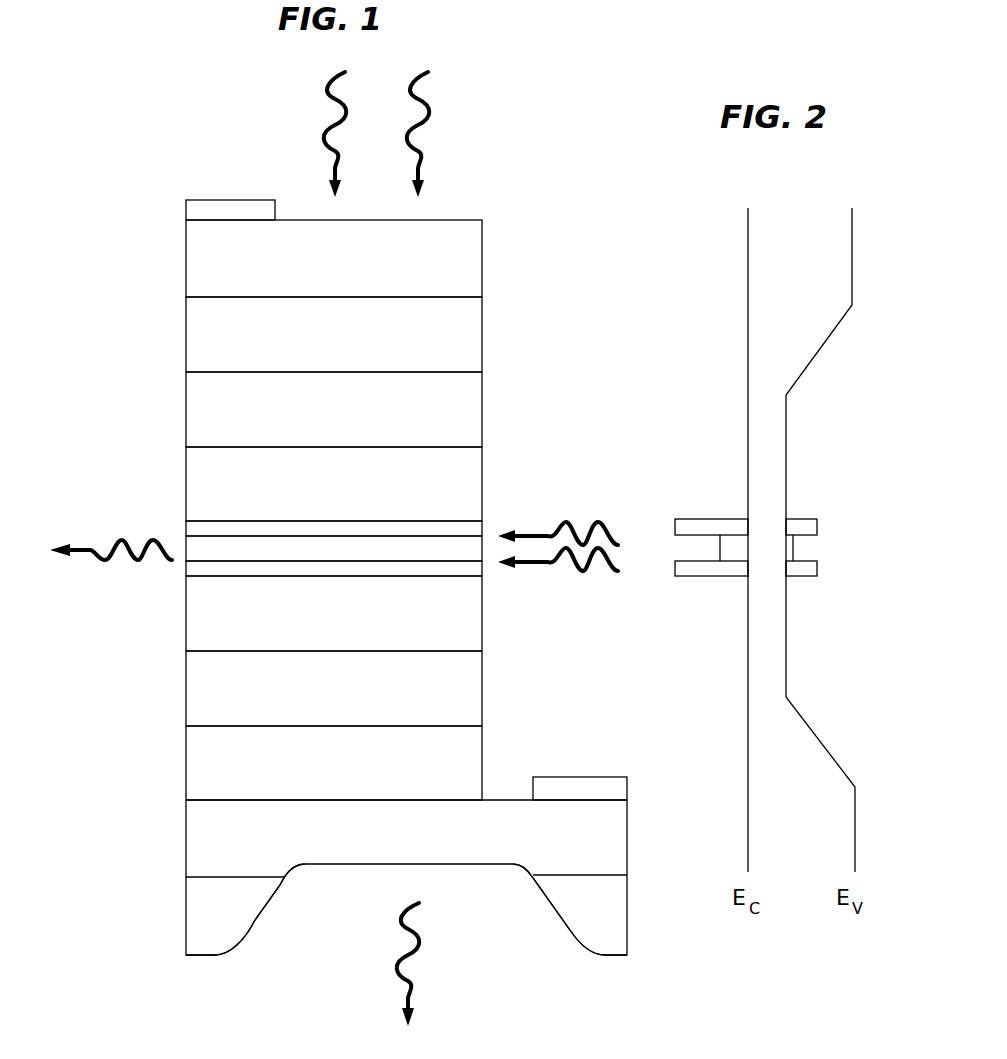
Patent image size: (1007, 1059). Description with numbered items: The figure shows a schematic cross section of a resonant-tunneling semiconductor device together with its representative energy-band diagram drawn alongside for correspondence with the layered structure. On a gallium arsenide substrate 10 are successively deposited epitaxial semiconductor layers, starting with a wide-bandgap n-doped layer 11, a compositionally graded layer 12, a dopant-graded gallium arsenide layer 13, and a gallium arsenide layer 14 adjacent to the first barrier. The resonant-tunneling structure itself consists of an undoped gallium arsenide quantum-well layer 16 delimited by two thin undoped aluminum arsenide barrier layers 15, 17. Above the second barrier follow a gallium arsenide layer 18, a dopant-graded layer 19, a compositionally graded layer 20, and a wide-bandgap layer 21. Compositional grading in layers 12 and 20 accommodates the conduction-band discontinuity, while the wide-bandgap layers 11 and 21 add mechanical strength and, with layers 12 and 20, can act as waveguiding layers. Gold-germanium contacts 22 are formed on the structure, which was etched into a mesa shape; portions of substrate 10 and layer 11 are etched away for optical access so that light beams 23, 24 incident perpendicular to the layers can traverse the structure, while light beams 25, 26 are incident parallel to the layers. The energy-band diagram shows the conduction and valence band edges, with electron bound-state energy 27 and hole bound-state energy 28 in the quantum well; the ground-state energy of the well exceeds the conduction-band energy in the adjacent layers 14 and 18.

In FIG. 1, the substrate 10 is at (197, 897).
In FIG. 1, the layer 11 is at (197, 824).
In FIG. 1, the layer 12 is at (197, 747).
In FIG. 1, the layer 13 is at (197, 677).
In FIG. 1, the layer 14 is at (197, 612).
In FIG. 1, the barrier layer 15 is at (197, 589).
In FIG. 1, the quantum-well layer 16 is at (197, 564).
In FIG. 1, the barrier layer 17 is at (197, 527).
In FIG. 1, the layer 18 is at (197, 489).
In FIG. 1, the layer 19 is at (197, 427).
In FIG. 1, the layer 20 is at (197, 354).
In FIG. 1, the layer 21 is at (197, 281).
In FIG. 1, the contacts 22 is at (232, 200).
In FIG. 1, the incident light beam 23 is at (330, 112).
In FIG. 1, the incident light beam 24 is at (428, 100).
In FIG. 1, the incident light beam 25 is at (570, 525).
In FIG. 1, the incident light beam 26 is at (588, 568).
In FIG. 2, the electron bound-state energy 27 is at (718, 540).
In FIG. 2, the hole bound-state energy 28 is at (800, 548).